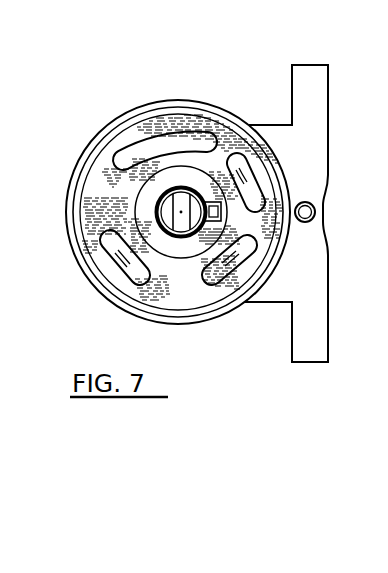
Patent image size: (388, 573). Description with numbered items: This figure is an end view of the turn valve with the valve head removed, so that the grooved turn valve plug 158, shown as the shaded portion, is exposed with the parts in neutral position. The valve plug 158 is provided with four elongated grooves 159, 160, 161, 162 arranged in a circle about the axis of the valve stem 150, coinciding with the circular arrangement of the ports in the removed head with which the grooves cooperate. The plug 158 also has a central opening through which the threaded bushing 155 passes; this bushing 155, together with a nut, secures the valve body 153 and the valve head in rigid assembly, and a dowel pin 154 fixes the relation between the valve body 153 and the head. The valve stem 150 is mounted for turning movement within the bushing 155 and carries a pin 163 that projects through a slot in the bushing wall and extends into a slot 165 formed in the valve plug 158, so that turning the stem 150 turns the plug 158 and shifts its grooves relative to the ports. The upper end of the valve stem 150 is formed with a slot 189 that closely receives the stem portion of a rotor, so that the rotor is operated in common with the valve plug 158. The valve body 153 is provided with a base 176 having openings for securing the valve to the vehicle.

The valve stem 150 is at (129, 229).
The valve body 153 is at (91, 153).
The dowel pin 154 is at (305, 216).
The threaded bushing 155 is at (177, 190).
The turn valve plug 158 is at (100, 192).
The elongated groove 159 is at (118, 262).
The elongated groove 160 is at (190, 137).
The elongated groove 161 is at (248, 182).
The elongated groove 162 is at (217, 268).
The pin 163 is at (203, 192).
The slot 165 is at (212, 202).
The base 176 is at (308, 287).
The slot 189 is at (184, 236).